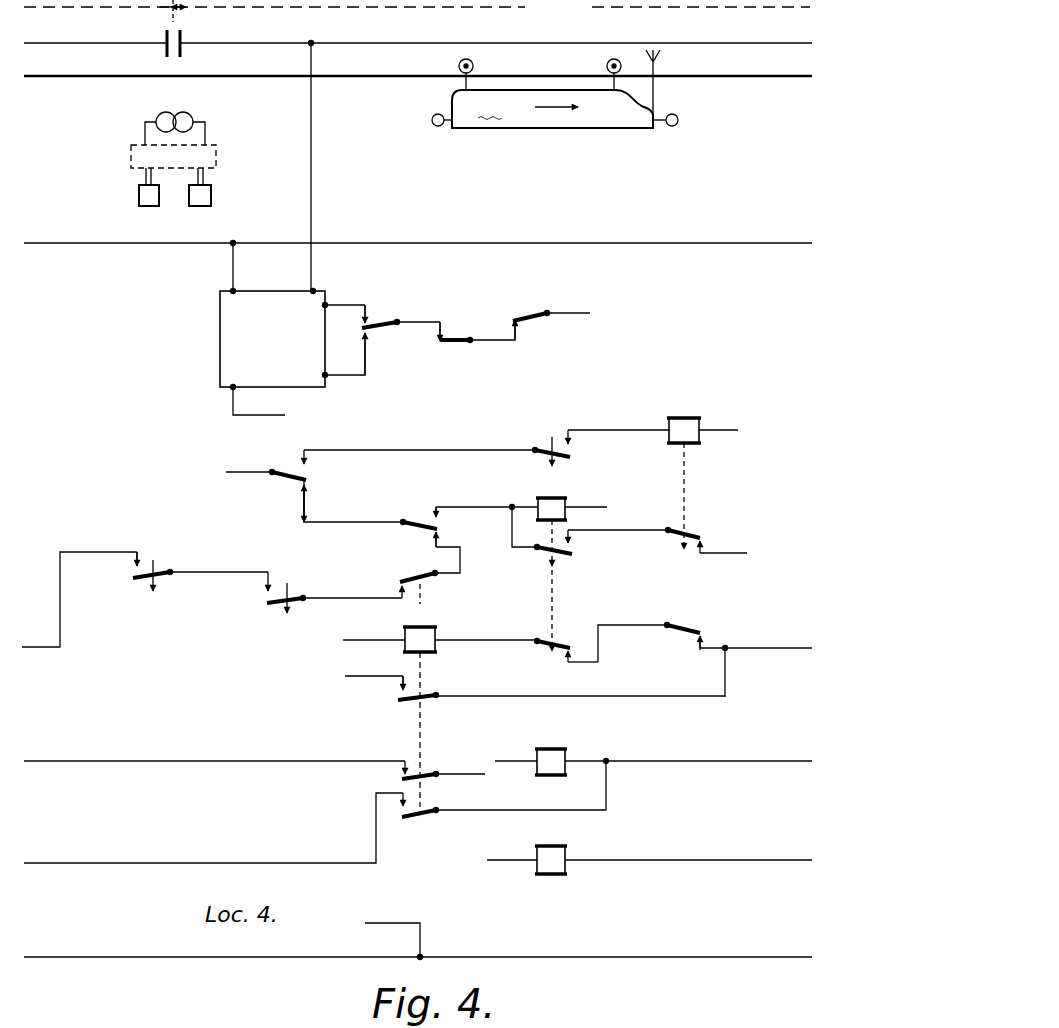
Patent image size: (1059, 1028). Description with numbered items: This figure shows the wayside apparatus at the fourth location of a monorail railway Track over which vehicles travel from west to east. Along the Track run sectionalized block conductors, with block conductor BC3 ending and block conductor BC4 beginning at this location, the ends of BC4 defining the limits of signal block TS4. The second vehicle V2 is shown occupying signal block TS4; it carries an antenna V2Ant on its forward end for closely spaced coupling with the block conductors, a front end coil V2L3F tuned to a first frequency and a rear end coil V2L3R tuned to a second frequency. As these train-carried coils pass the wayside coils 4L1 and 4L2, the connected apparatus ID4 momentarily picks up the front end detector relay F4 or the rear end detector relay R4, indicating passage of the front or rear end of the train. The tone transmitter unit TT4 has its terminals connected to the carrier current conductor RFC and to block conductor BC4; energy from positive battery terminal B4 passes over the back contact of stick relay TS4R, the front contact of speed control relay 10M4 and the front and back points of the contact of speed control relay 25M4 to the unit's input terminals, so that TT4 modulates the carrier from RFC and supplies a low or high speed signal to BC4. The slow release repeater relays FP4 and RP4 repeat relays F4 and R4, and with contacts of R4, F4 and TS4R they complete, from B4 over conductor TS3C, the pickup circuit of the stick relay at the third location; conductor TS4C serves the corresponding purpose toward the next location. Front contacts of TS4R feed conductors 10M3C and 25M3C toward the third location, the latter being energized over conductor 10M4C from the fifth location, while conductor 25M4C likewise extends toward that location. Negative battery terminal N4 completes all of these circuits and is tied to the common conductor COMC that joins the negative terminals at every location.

The signal block TS4 is at (417, 11).
The block conductor BC3 is at (97, 43).
The block conductor BC4 is at (424, 44).
The monorail railway track Track is at (402, 76).
The first wayside coil 4L1 is at (160, 115).
The second wayside coil 4L2 is at (187, 115).
The train identification apparatus ID4 is at (173, 165).
The front end detector relay F4 is at (139, 196).
The rear end detector relay R4 is at (211, 196).
The carrier current conductor RFC is at (577, 243).
The second vehicle V2 is at (552, 93).
The rear end train-carried coil V2L3R is at (432, 118).
The front end train-carried coil V2L3F is at (690, 108).
The antenna V2Ant is at (660, 56).
The tone transmitter unit TT4 is at (333, 370).
The speed control relay 25M4 is at (386, 340).
The speed control relay 10M4 is at (455, 353).
The signal block stick relay TS4R is at (438, 590).
The positive battery terminal B4 is at (695, 530).
The slow release repeater relay FP4 is at (130, 598).
The slow release repeater relay RP4 is at (266, 620).
The negative battery terminal N4 is at (494, 674).
The conductor TS3C is at (24, 650).
The conductor TS4C is at (804, 648).
The conductor 10M3C is at (240, 761).
The conductor 25M3C is at (247, 862).
The conductor 10M4C is at (812, 761).
The conductor 25M4C is at (807, 860).
The common conductor COMC is at (676, 957).